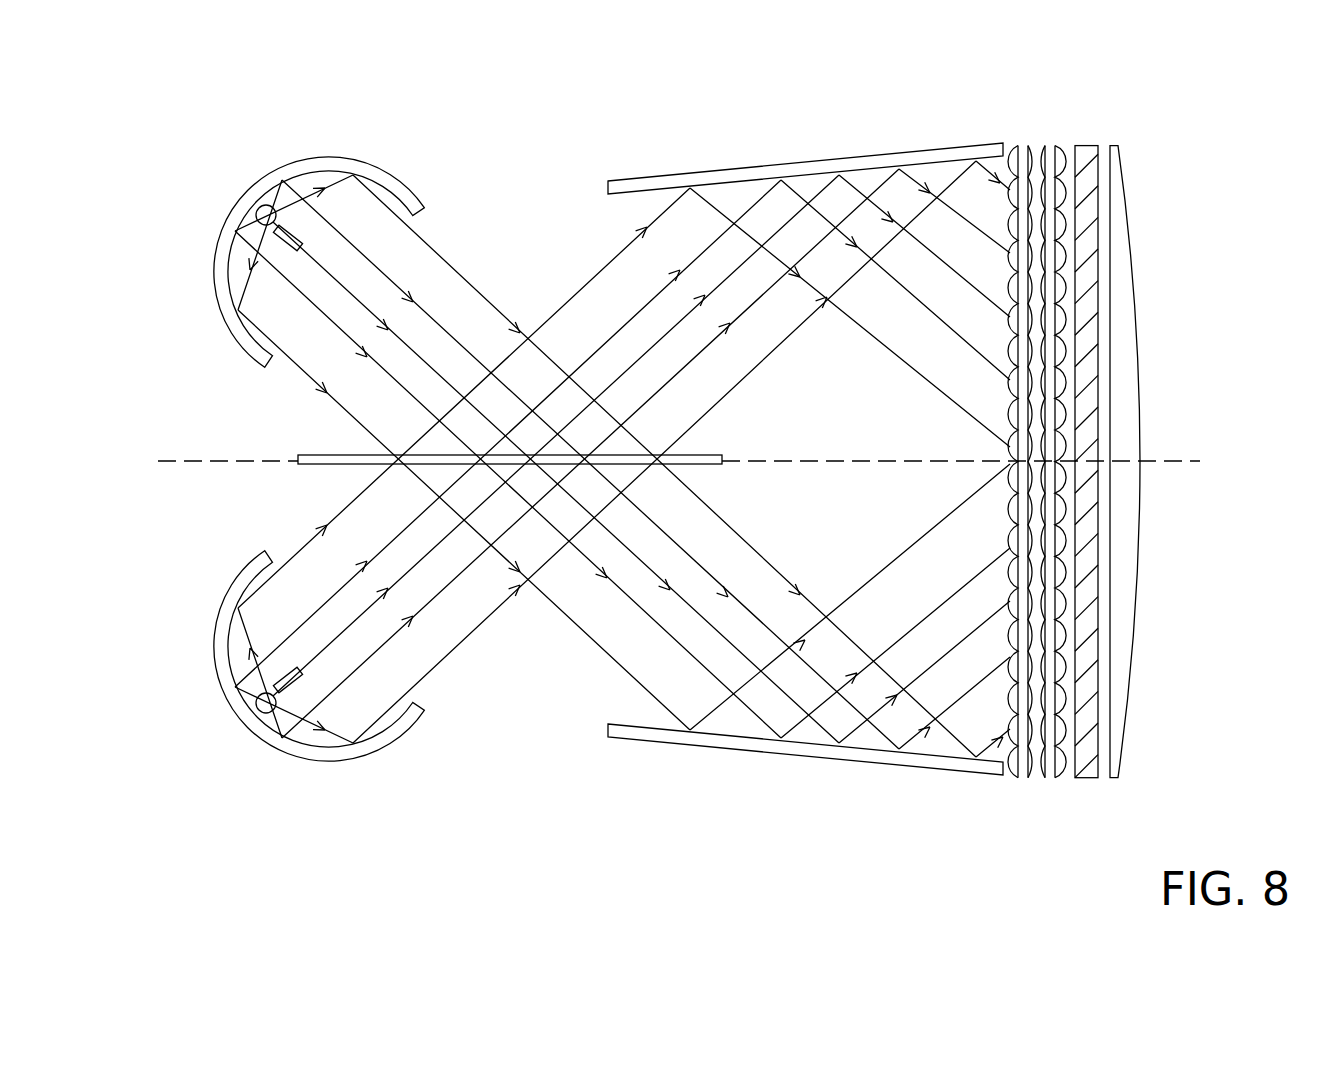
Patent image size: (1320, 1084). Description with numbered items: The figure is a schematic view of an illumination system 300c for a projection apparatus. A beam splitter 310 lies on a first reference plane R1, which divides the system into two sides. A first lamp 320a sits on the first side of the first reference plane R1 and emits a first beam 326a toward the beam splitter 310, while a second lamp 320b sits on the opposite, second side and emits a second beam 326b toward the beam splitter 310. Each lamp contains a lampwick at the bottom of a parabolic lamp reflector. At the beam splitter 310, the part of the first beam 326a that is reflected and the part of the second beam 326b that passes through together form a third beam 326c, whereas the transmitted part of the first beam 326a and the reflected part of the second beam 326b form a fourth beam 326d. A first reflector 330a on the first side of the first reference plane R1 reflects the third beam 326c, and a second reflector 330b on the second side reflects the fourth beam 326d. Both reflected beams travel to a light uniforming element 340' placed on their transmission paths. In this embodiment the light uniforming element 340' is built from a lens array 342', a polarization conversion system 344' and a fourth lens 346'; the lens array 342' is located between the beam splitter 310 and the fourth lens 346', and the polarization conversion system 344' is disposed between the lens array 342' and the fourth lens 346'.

The illumination system 300c is at (1260, 810).
The beam splitter 310 is at (298, 461).
The first lamp 320a is at (242, 244).
The second lamp 320b is at (319, 719).
The first beam 326a is at (423, 238).
The second beam 326b is at (450, 655).
The third beam 326c is at (597, 272).
The fourth beam 326d is at (930, 537).
The first reflector 330a is at (760, 177).
The second reflector 330b is at (663, 735).
The light uniforming element 340' is at (1086, 522).
The lens array 342' is at (1037, 496).
The polarization conversion system 344' is at (1095, 496).
The fourth lens 346' is at (1140, 493).
The first reference plane R1 is at (1167, 462).